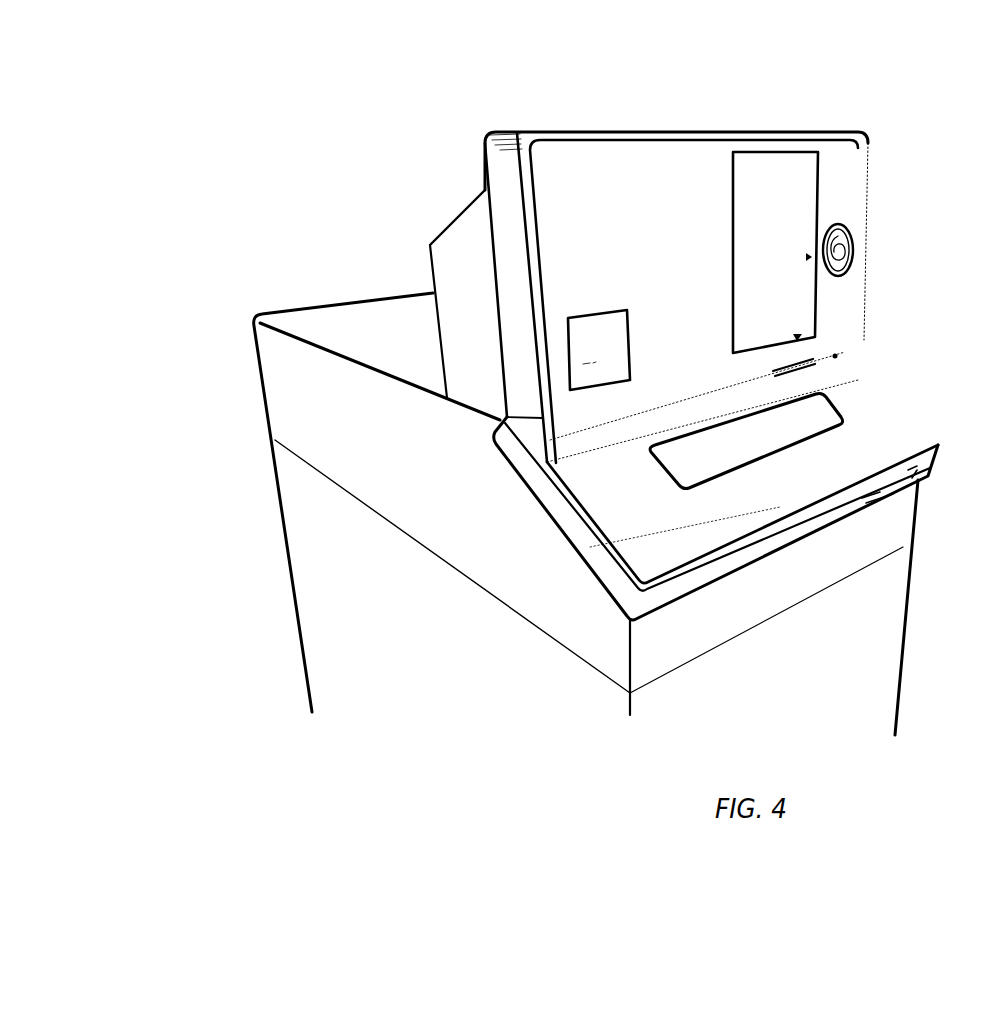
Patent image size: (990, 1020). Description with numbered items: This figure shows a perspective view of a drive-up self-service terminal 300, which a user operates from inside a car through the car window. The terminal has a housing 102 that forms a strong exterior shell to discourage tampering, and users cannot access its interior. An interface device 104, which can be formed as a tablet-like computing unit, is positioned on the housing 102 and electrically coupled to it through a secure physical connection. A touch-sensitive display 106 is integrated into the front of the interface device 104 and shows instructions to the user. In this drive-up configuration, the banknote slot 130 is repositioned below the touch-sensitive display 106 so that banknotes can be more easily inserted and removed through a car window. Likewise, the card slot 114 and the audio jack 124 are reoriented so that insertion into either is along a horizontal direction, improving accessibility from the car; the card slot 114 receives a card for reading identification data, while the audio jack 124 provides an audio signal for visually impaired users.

The drive-up self-service terminal 300 is at (258, 77).
The housing 102 is at (320, 523).
The interface device 104 is at (848, 178).
The touch-sensitive display 106 is at (607, 178).
The card slot 114 is at (818, 370).
The audio jack 124 is at (840, 357).
The banknote slot 130 is at (672, 465).